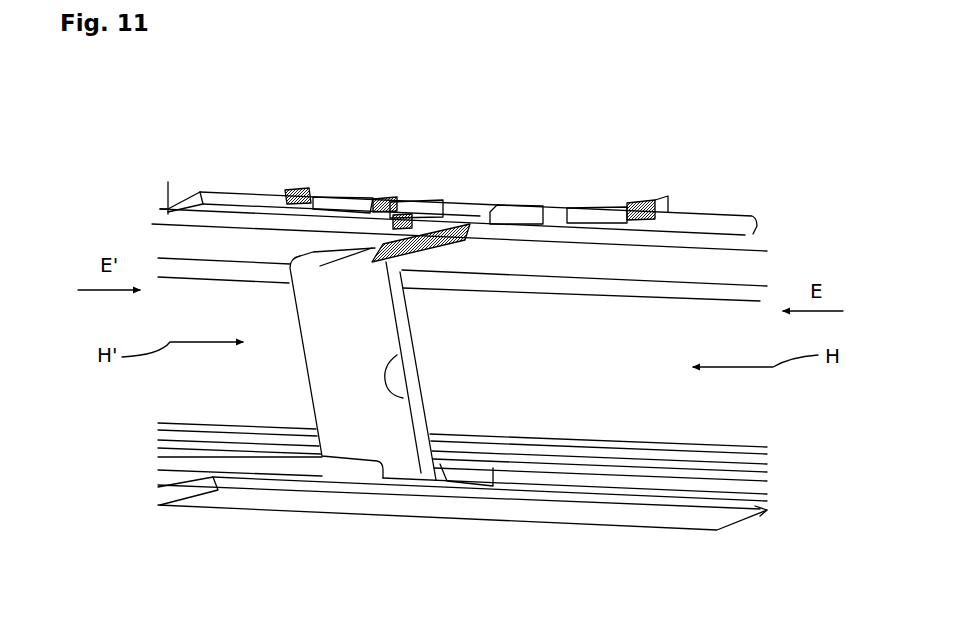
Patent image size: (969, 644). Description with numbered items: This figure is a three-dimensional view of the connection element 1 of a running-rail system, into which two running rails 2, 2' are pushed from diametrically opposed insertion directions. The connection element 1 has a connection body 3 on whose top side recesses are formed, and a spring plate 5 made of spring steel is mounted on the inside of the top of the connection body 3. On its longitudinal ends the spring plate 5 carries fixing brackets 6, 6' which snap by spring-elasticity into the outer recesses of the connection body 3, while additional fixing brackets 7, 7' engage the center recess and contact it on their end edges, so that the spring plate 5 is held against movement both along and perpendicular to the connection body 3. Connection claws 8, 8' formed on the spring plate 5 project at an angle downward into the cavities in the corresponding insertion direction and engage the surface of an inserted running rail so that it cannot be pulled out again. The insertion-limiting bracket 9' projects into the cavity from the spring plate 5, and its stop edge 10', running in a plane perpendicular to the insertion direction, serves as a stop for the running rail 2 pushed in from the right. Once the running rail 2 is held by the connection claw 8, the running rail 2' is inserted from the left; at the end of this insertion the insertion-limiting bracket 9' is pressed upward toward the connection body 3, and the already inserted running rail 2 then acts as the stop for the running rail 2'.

The connection element 1 is at (712, 203).
The running rail 2 is at (467, 232).
The running rail 2' is at (156, 174).
The connection body 3 is at (247, 193).
The spring plate 5 is at (663, 193).
The fixing bracket 6 is at (638, 161).
The fixing bracket 6' is at (291, 145).
The fixing bracket 7 is at (507, 145).
The fixing bracket 7' is at (416, 143).
The connection claw 8 is at (578, 152).
The connection claw 8' is at (355, 141).
The insertion-limiting bracket 9' is at (391, 367).
The stop edge 10' is at (449, 278).